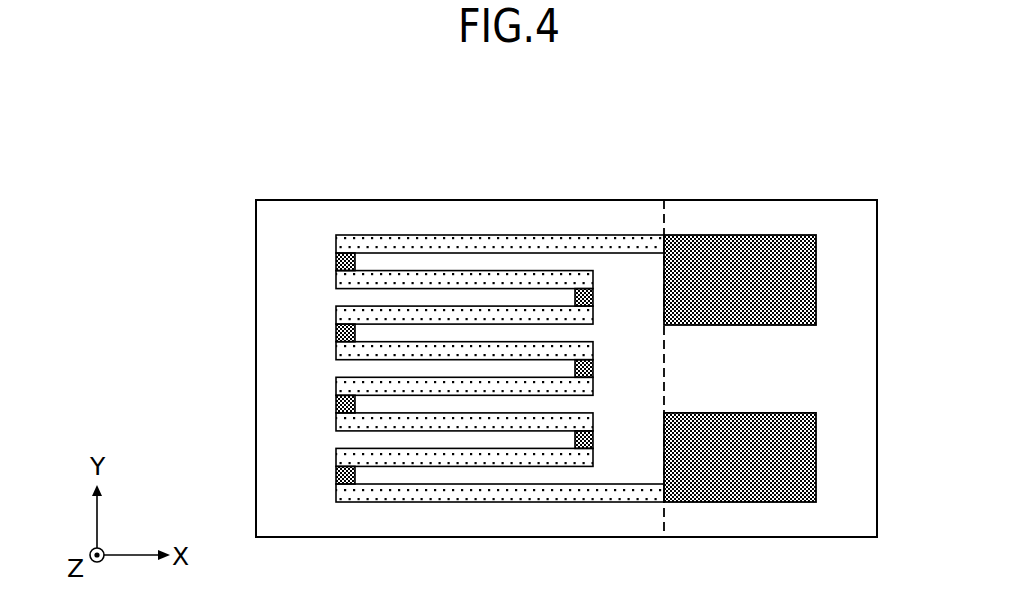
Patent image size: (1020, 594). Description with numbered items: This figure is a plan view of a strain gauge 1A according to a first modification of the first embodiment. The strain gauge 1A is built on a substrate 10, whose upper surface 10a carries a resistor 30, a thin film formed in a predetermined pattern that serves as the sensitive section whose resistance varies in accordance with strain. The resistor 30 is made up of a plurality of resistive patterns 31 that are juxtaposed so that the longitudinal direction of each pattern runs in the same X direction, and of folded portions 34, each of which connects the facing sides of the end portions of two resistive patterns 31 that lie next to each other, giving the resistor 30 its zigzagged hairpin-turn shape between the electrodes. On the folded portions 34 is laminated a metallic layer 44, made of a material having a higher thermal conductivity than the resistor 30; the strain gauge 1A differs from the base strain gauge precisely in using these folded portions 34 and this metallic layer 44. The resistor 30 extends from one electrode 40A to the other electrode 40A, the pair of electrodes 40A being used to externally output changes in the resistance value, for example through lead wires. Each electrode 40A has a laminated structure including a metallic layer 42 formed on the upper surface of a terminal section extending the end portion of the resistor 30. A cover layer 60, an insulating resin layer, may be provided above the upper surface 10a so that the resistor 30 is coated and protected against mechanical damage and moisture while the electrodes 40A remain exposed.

The strain gauge 1A is at (158, 134).
The substrate 10 is at (284, 192).
The upper surface of the substrate 10a is at (505, 218).
The resistor 30 is at (405, 142).
The resistive patterns 31 is at (417, 243).
The folded portions 34 is at (391, 311).
The metallic layer 44 is at (336, 333).
The electrodes 40A is at (756, 320).
The metallic layers 42 is at (742, 262).
The cover layer 60 is at (672, 220).